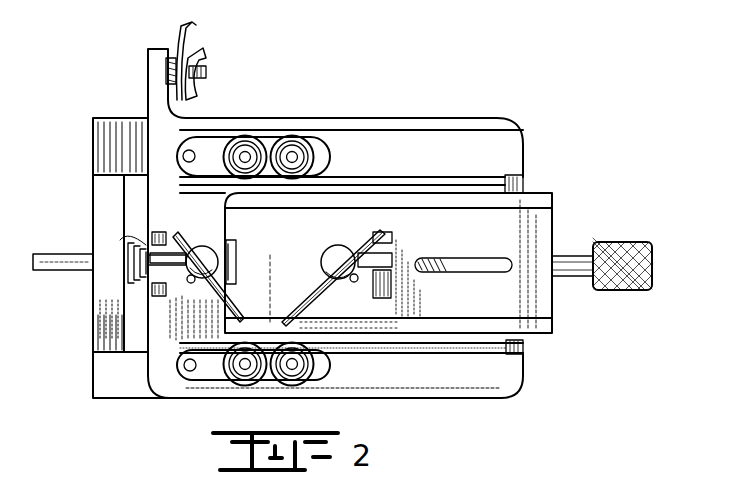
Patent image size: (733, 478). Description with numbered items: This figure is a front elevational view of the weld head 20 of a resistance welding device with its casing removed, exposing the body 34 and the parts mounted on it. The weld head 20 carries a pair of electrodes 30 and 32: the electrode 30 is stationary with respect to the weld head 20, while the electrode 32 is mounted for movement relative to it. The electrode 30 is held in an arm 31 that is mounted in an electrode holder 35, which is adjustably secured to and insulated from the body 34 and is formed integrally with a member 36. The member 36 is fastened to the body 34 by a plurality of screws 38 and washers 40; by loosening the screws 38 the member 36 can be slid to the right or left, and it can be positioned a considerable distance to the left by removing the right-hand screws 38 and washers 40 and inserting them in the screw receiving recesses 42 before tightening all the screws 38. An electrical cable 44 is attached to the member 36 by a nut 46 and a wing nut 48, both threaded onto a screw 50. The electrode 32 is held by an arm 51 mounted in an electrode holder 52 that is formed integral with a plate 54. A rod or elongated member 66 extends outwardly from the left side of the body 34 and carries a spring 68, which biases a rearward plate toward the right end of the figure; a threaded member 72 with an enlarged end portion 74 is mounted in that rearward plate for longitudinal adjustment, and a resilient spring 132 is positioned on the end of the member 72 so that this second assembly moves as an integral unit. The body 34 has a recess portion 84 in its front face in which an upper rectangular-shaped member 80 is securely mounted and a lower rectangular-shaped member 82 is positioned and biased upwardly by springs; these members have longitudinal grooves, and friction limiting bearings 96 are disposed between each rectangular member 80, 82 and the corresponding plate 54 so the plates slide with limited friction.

The weld head 20 is at (496, 114).
The electrode 30 is at (171, 243).
The arm 31 is at (222, 270).
The electrode 32 is at (364, 238).
The body 34 is at (522, 381).
The electrode holder 35 is at (222, 238).
The member 36 is at (150, 160).
The screws 38 is at (240, 150).
The washers 40 is at (258, 141).
The screw receiving recesses 42 is at (191, 150).
The electrical cable 44 is at (197, 25).
The nut 46 is at (170, 50).
The wing nut 48 is at (203, 50).
The screw 50 is at (207, 72).
The arm 51 is at (320, 268).
The electrode holder 52 is at (390, 246).
The plate 54 is at (552, 212).
The rod or elongated member 66 is at (62, 253).
The spring 68 is at (128, 243).
The member 72 is at (462, 258).
The enlarged end portion 74 is at (642, 240).
The upper rectangular-shaped member 80 is at (493, 182).
The lower rectangular-shaped member 82 is at (436, 346).
The recess portion 84 is at (135, 297).
The friction limiting devices or bearings 96 is at (521, 187).
The resilient means or spring 132 is at (439, 272).